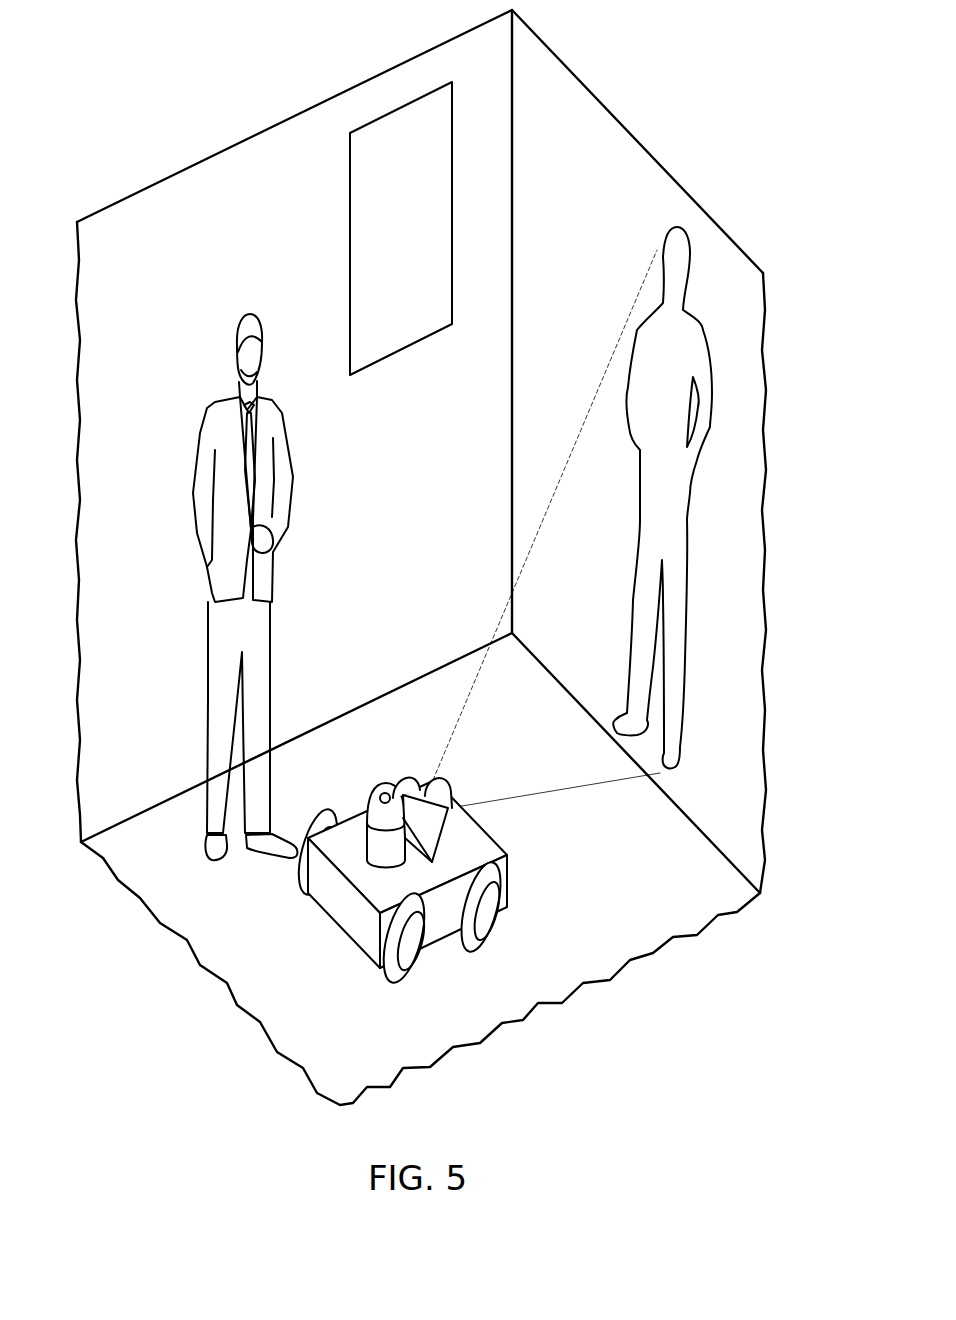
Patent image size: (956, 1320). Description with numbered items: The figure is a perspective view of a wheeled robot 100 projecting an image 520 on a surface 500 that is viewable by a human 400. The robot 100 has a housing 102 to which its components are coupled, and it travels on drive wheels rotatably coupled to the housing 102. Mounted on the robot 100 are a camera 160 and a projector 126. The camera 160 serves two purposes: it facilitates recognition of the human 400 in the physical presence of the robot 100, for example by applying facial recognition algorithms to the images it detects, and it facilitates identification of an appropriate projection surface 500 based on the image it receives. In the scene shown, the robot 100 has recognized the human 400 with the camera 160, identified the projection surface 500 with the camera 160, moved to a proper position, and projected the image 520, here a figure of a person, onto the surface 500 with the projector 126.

The robot 100 is at (442, 885).
The housing 102 is at (438, 928).
The projector 126 is at (418, 792).
The camera 160 is at (387, 787).
The human 400 is at (193, 428).
The surface 500 is at (628, 170).
The image 520 is at (703, 297).